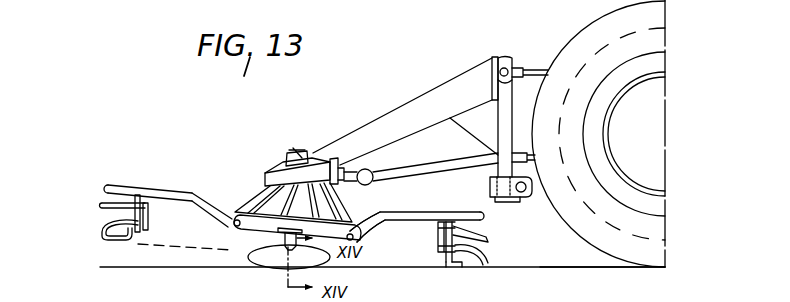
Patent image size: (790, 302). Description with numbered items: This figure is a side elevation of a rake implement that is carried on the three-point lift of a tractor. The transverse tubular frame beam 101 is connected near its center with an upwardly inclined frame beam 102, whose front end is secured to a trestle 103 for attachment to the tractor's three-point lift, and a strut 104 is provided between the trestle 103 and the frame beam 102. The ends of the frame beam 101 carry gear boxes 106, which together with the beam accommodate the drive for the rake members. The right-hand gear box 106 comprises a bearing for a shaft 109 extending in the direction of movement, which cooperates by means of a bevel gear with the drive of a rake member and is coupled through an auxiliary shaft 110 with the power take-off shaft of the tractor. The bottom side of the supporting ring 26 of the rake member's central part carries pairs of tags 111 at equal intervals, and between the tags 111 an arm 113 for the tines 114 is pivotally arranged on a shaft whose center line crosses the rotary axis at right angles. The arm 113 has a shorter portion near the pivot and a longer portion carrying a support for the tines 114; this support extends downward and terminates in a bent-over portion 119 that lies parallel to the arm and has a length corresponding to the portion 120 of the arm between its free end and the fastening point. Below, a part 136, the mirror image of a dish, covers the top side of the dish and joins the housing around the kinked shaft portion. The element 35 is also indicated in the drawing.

The supporting ring 26 is at (352, 226).
The conical housing 35 is at (252, 193).
The tubular frame beam 101 is at (284, 157).
The upwardly inclined frame beam 102 is at (397, 115).
The trestle 103 is at (505, 118).
The strut 104 is at (463, 134).
The gear box 106 is at (265, 174).
The shaft 109 is at (343, 166).
The auxiliary shaft 110 is at (463, 172).
The tags 111 is at (235, 228).
The arm 113 is at (199, 189).
The tine 114 is at (100, 206).
The bent-over portion 119 is at (120, 241).
The portion 120 is at (125, 166).
The part 136 is at (273, 260).